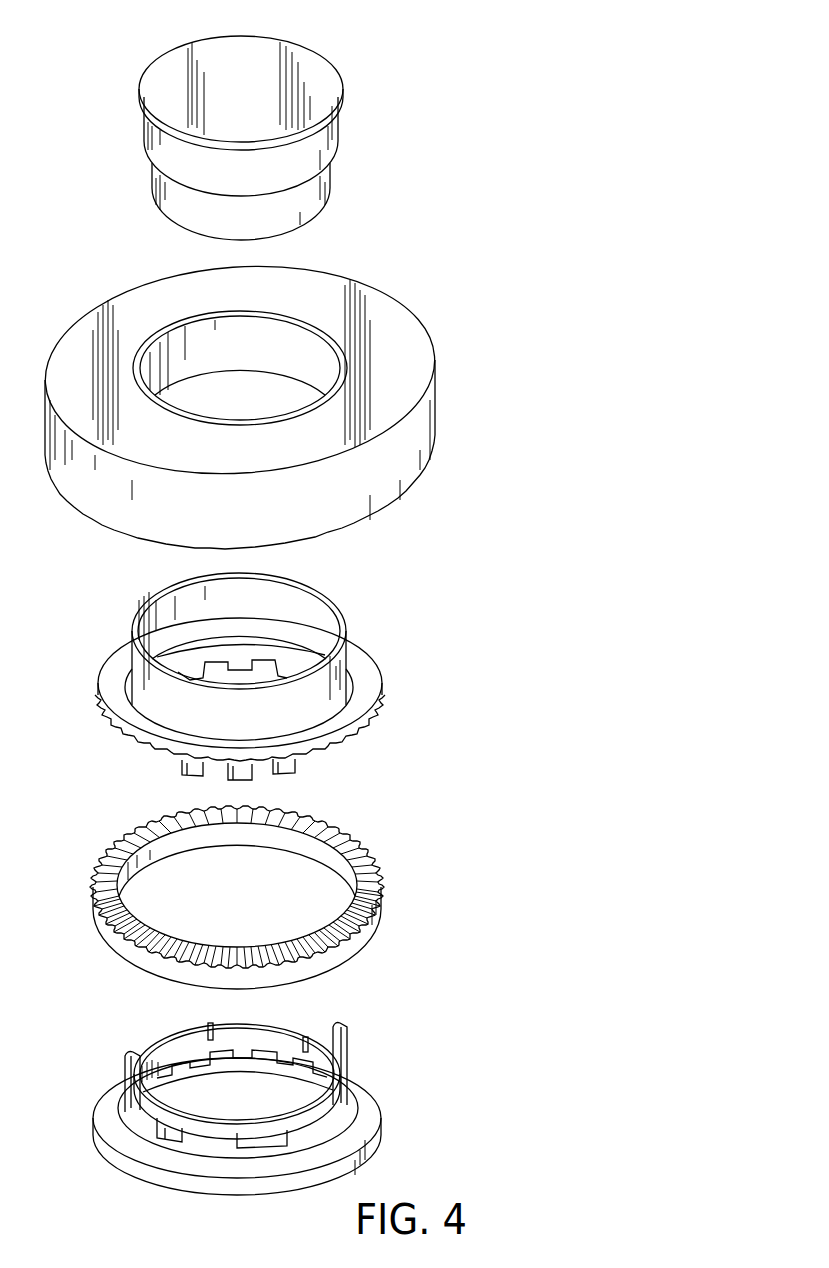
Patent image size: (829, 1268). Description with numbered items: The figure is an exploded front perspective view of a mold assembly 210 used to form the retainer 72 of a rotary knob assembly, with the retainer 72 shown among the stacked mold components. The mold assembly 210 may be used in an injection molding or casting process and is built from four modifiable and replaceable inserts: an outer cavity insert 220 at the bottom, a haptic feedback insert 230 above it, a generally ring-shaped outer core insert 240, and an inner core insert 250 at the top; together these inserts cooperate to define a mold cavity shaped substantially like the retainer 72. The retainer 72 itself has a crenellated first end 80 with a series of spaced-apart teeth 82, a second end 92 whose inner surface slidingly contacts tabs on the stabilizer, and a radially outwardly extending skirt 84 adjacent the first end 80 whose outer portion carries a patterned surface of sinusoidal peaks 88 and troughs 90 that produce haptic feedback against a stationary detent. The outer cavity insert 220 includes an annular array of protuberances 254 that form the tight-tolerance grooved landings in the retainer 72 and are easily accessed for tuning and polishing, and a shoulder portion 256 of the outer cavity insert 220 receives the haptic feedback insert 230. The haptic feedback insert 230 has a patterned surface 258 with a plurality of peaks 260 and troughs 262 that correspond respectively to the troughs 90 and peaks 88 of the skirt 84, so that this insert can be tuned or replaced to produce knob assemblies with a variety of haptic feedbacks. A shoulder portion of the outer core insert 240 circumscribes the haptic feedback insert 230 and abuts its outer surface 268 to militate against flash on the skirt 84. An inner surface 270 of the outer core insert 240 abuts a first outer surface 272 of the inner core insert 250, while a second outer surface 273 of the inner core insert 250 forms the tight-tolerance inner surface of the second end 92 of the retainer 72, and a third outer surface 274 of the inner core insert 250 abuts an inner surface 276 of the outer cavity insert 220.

The mold assembly 210 is at (117, 62).
The inner core insert 250 is at (348, 128).
The first outer surface 272 is at (345, 96).
The second outer surface 273 is at (142, 140).
The third outer surface 274 is at (157, 197).
The outer core insert 240 is at (443, 418).
The inner surface 270 is at (328, 336).
The retainer 72 is at (86, 692).
The second end 92 is at (348, 654).
The skirt 84 is at (383, 684).
The peaks 88 is at (120, 742).
The troughs 90 is at (133, 748).
The first end 80 is at (297, 762).
The teeth 82 is at (192, 774).
The haptic feedback insert 230 is at (392, 922).
The patterned surface 258 is at (367, 900).
The peaks 260 is at (335, 932).
The troughs 262 is at (320, 944).
The outer surface 268 is at (110, 943).
The outer cavity insert 220 is at (392, 1118).
The protuberances 254 is at (138, 1112).
The shoulder portion 256 is at (372, 1093).
The inner surface 276 is at (182, 1078).